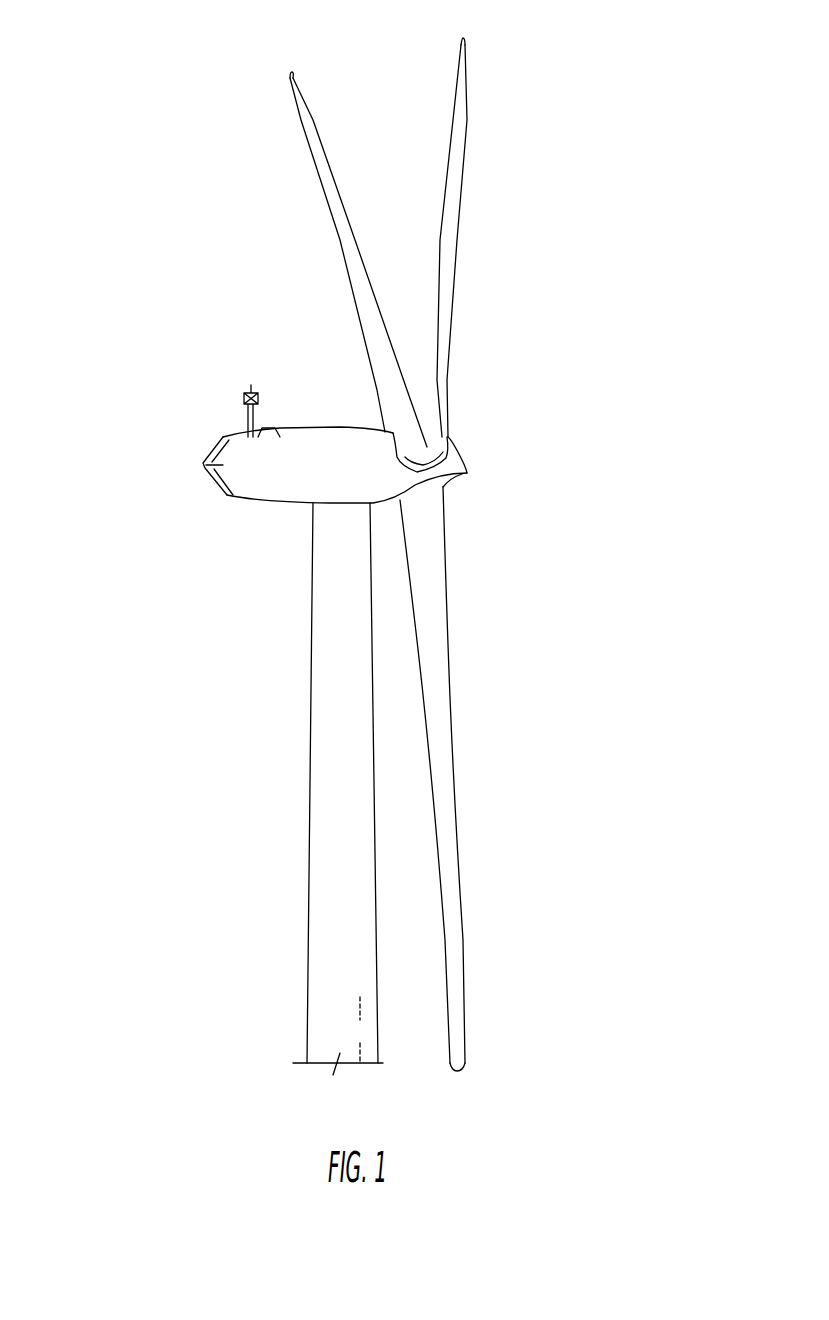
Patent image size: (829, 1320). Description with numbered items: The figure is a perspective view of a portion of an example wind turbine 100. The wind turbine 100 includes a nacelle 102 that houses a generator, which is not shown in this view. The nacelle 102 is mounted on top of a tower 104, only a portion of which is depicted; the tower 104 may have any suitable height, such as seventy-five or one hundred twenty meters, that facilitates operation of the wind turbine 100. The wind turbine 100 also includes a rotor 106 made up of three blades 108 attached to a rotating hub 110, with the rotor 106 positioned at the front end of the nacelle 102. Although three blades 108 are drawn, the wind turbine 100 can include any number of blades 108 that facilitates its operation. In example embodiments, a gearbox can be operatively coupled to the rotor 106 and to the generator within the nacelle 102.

The wind turbine 100 is at (182, 121).
The nacelle 102 is at (243, 510).
The tower 104 is at (307, 742).
The rotor 106 is at (553, 217).
The blades 108 is at (327, 157).
The rotating hub 110 is at (462, 475).